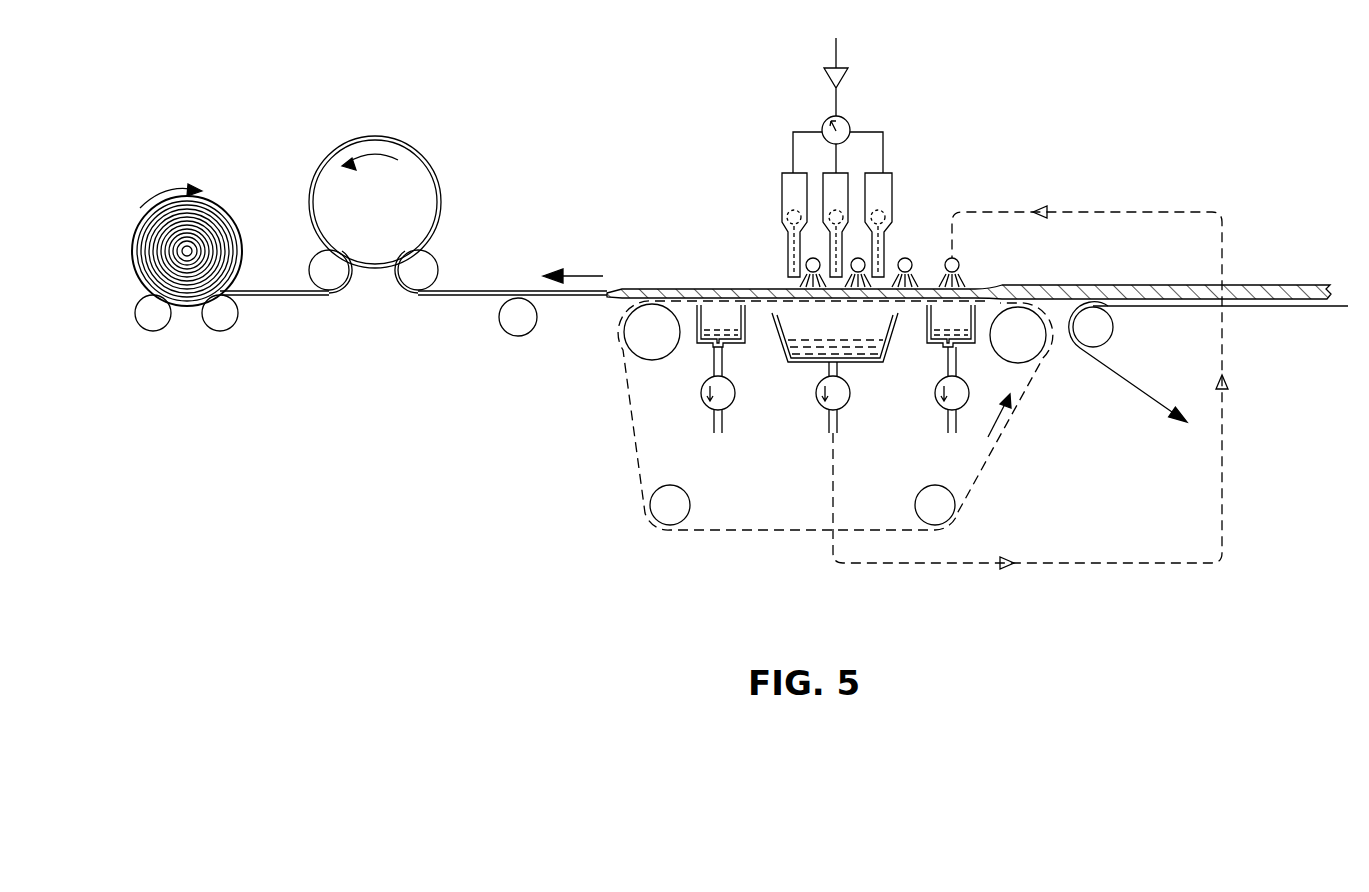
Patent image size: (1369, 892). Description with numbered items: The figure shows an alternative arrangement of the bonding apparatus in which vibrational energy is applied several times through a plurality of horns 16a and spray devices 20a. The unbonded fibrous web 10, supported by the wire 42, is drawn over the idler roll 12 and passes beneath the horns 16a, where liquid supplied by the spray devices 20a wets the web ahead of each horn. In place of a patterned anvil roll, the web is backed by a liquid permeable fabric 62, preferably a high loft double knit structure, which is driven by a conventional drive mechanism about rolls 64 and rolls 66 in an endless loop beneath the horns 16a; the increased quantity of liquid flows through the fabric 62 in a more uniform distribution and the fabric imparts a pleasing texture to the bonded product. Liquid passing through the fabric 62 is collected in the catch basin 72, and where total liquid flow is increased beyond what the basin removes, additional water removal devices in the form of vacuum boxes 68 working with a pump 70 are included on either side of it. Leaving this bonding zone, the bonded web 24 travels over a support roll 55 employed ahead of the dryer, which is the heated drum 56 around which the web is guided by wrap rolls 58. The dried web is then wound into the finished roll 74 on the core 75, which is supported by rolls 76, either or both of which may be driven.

The unbonded fibrous web 10 is at (1262, 285).
The idler roll 12 is at (1105, 335).
The horns 16a is at (865, 175).
The spray devices 20a is at (952, 258).
The bonded web 24 is at (457, 297).
The wire 42 is at (1130, 385).
The support roll 55 is at (528, 320).
The heated drum 56 is at (391, 215).
The wrap rolls 58 is at (332, 278).
The liquid permeable fabric 62 is at (633, 435).
The rolls 64 is at (666, 345).
The rolls 66 is at (678, 512).
The vacuum boxes 68 is at (710, 343).
The pump 70 is at (817, 405).
The catch basin 72 is at (875, 364).
The finished roll 74 is at (136, 262).
The core 75 is at (192, 250).
The rolls 76 is at (158, 328).